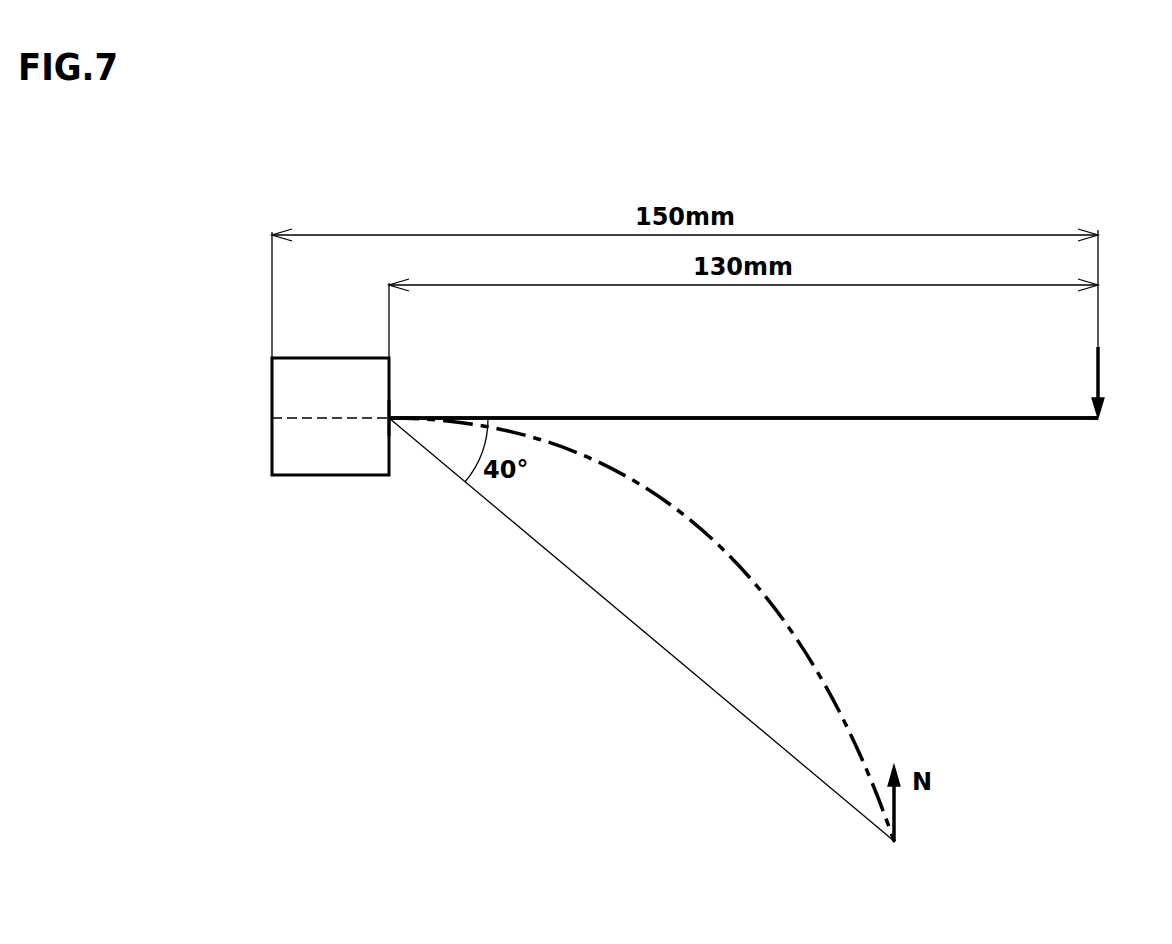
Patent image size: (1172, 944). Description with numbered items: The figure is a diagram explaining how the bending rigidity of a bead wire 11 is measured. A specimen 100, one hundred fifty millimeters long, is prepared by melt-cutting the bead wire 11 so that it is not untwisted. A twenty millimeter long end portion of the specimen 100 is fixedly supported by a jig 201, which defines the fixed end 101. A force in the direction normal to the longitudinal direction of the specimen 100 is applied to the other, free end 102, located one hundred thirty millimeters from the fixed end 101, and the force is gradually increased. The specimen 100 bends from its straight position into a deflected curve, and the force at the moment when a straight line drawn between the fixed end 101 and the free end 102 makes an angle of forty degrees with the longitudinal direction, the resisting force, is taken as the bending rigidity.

The jig 201 is at (337, 382).
The specimen 100 is at (745, 572).
The bead wire 11 is at (795, 418).
The fixed end 101 is at (390, 420).
The free end 102 is at (1099, 420).